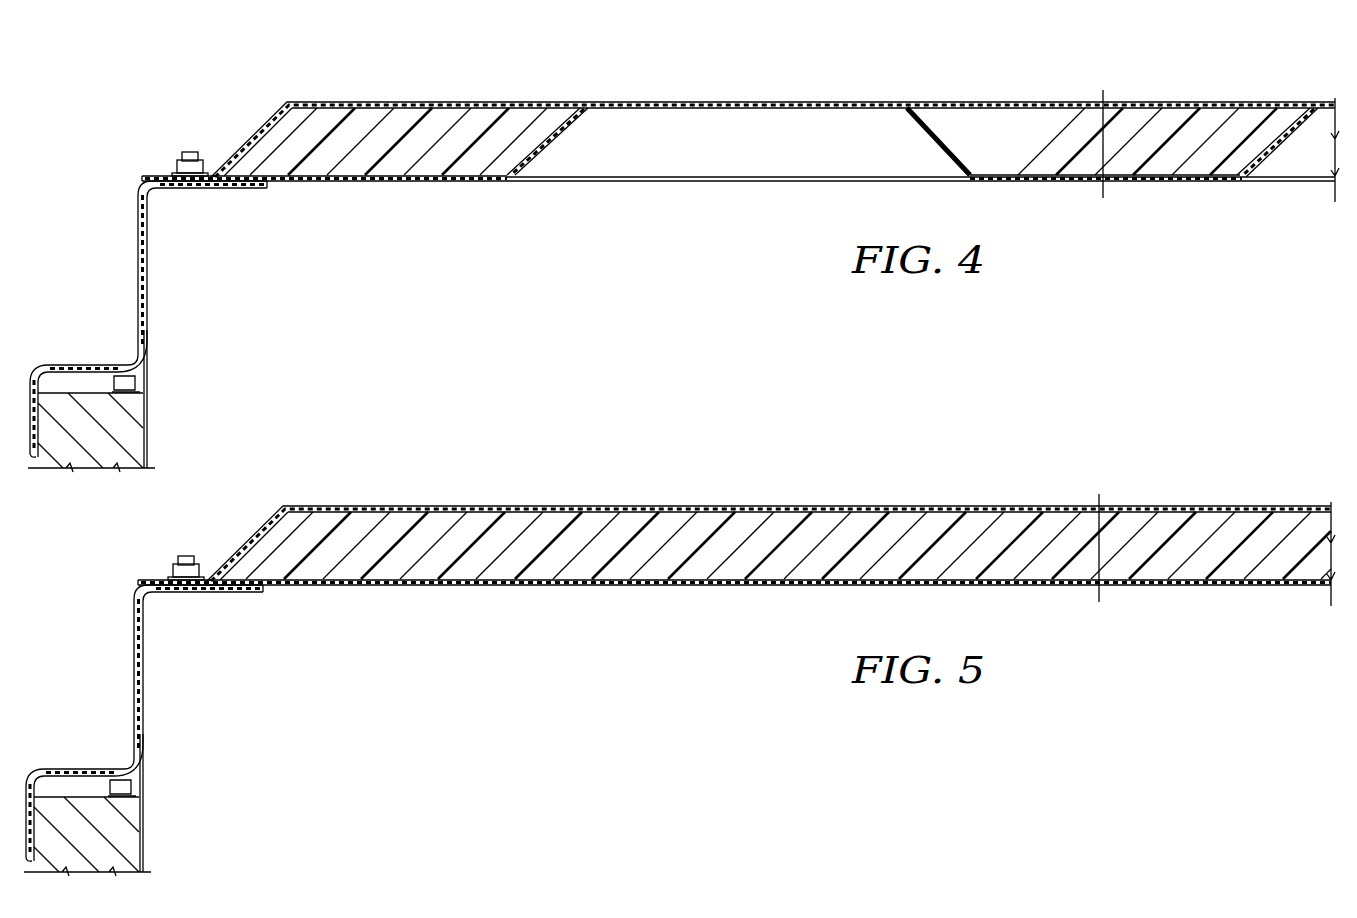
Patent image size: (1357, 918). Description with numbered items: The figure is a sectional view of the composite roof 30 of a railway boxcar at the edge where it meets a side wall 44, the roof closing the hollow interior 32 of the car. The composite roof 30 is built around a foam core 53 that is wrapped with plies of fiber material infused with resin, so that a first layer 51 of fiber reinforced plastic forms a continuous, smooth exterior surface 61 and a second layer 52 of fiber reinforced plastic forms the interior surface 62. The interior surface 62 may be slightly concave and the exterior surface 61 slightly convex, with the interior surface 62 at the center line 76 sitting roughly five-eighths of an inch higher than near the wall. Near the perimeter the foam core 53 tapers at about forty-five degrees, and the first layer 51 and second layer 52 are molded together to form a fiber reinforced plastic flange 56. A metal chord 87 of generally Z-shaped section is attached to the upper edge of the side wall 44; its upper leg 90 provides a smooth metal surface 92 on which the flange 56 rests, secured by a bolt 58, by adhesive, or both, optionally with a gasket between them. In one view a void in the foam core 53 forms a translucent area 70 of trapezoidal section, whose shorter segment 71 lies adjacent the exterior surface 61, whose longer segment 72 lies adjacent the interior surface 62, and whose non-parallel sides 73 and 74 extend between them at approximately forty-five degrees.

In FIG. 4, the composite roof 30 is at (1140, 95).
In FIG. 5, the composite roof 30 is at (738, 544).
In FIG. 4, the hollow interior 32 is at (168, 309).
In FIG. 5, the hollow interior 32 is at (144, 707).
In FIG. 4, the side wall 44 is at (125, 415).
In FIG. 5, the side wall 44 is at (115, 805).
In FIG. 4, the first layer of fiber reinforced plastic 51 is at (297, 101).
In FIG. 5, the first layer of fiber reinforced plastic 51 is at (768, 519).
In FIG. 4, the second layer of fiber reinforced plastic 52 is at (300, 185).
In FIG. 5, the second layer of fiber reinforced plastic 52 is at (770, 609).
In FIG. 4, the foam core 53 is at (450, 128).
In FIG. 5, the foam core 53 is at (788, 515).
In FIG. 4, the flange 56 is at (150, 176).
In FIG. 5, the flange 56 is at (164, 556).
In FIG. 4, the bolt 58 is at (185, 150).
In FIG. 5, the bolt 58 is at (185, 539).
In FIG. 4, the exterior surface 61 is at (381, 97).
In FIG. 5, the exterior surface 61 is at (771, 513).
In FIG. 4, the interior surface 62 is at (366, 190).
In FIG. 5, the interior surface 62 is at (736, 616).
In FIG. 4, the translucent area 70 is at (842, 99).
In FIG. 4, the shorter segment 71 is at (695, 113).
In FIG. 4, the longer segment 72 is at (755, 176).
In FIG. 4, the non-parallel side 73 is at (580, 134).
In FIG. 4, the non-parallel side 74 is at (925, 130).
In FIG. 4, the center line 76 is at (1105, 190).
In FIG. 5, the center line 76 is at (1124, 557).
In FIG. 4, the metal chord 87 is at (148, 255).
In FIG. 5, the metal chord 87 is at (111, 730).
In FIG. 4, the upper leg 90 is at (138, 215).
In FIG. 5, the upper leg 90 is at (112, 624).
In FIG. 4, the metal surface 92 is at (143, 184).
In FIG. 5, the metal surface 92 is at (175, 577).